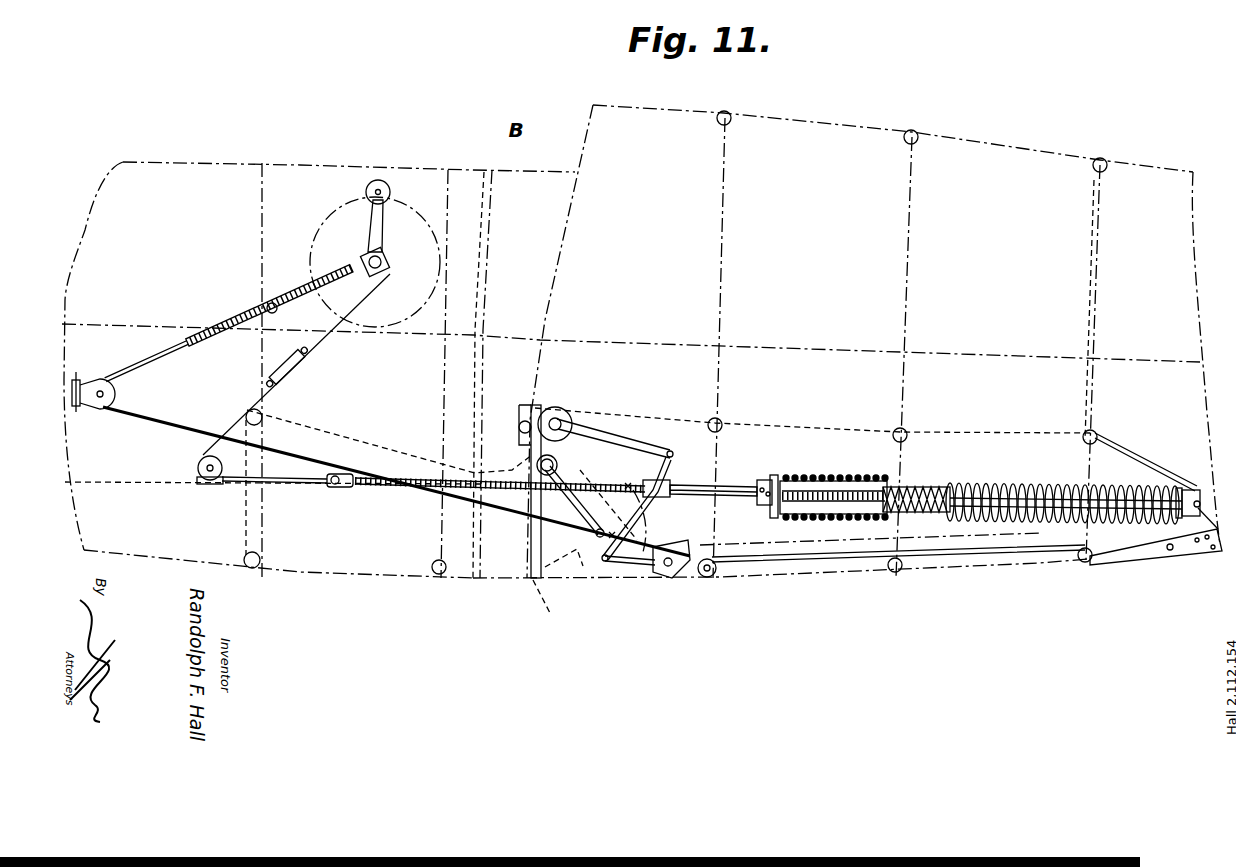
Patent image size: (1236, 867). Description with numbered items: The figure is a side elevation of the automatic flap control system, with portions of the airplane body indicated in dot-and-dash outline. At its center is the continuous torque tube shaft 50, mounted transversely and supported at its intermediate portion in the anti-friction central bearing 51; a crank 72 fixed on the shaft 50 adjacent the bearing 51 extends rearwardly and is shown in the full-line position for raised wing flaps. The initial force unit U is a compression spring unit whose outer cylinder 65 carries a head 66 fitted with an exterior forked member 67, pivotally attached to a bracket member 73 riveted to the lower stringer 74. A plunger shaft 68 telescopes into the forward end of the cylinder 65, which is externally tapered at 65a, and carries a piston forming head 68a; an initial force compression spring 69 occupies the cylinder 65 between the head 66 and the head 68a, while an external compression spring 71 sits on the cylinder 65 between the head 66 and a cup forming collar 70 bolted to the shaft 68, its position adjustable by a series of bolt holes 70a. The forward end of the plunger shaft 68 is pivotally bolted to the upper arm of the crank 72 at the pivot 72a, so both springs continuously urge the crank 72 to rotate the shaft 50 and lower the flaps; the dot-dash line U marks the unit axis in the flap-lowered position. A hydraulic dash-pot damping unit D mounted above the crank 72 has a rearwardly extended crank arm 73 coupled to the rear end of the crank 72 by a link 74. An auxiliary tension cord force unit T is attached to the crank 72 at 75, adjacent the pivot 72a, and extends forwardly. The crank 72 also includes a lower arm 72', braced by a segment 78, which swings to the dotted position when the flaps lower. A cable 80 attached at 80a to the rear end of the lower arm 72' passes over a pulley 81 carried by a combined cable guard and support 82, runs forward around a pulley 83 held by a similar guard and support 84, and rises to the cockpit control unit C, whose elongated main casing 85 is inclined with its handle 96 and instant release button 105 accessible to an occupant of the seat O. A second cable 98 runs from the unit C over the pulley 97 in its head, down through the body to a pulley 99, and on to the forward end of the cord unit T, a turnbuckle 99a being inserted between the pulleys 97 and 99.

The torque tube shaft member 50 is at (540, 467).
The central bearing 51 is at (521, 432).
The outer cylinder 65 is at (910, 490).
The externally tapered end 65a is at (800, 478).
The head 66 is at (1196, 492).
The forked member 67 is at (1185, 512).
The plunger shaft 68 is at (722, 486).
The piston forming plug or head 68a is at (882, 482).
The initial force compression spring 69 is at (922, 487).
The cup forming collar 70 is at (776, 478).
The bolt holes 70a is at (758, 498).
The external compression spring 71 is at (1000, 486).
The crank 72 is at (636, 475).
The pivot 72a is at (665, 483).
The lower arm 72' is at (550, 607).
The bracket member 73 is at (593, 428).
The lower stringer 74 is at (1203, 553).
The cord attachment point 75 is at (665, 497).
The segment 78 is at (620, 494).
The cable 80 is at (160, 357).
The cable attachment point 80a is at (600, 540).
The pulley 81 is at (675, 572).
The combined cable guard and support 82 is at (718, 574).
The pulley 83 is at (120, 394).
The combined cable guard and support 84 is at (85, 408).
The main casing or housing 85 is at (282, 296).
The handle 96 is at (380, 232).
The pulley 97 is at (387, 268).
The cable 98 is at (322, 342).
The pulley 99 is at (197, 466).
The turnbuckle 99a is at (296, 370).
The release button 105 is at (278, 306).
The control and operating unit C is at (224, 316).
The damping unit D is at (571, 410).
The seat O is at (360, 428).
The auxiliary force unit T is at (395, 490).
The initial force unit U is at (843, 585).